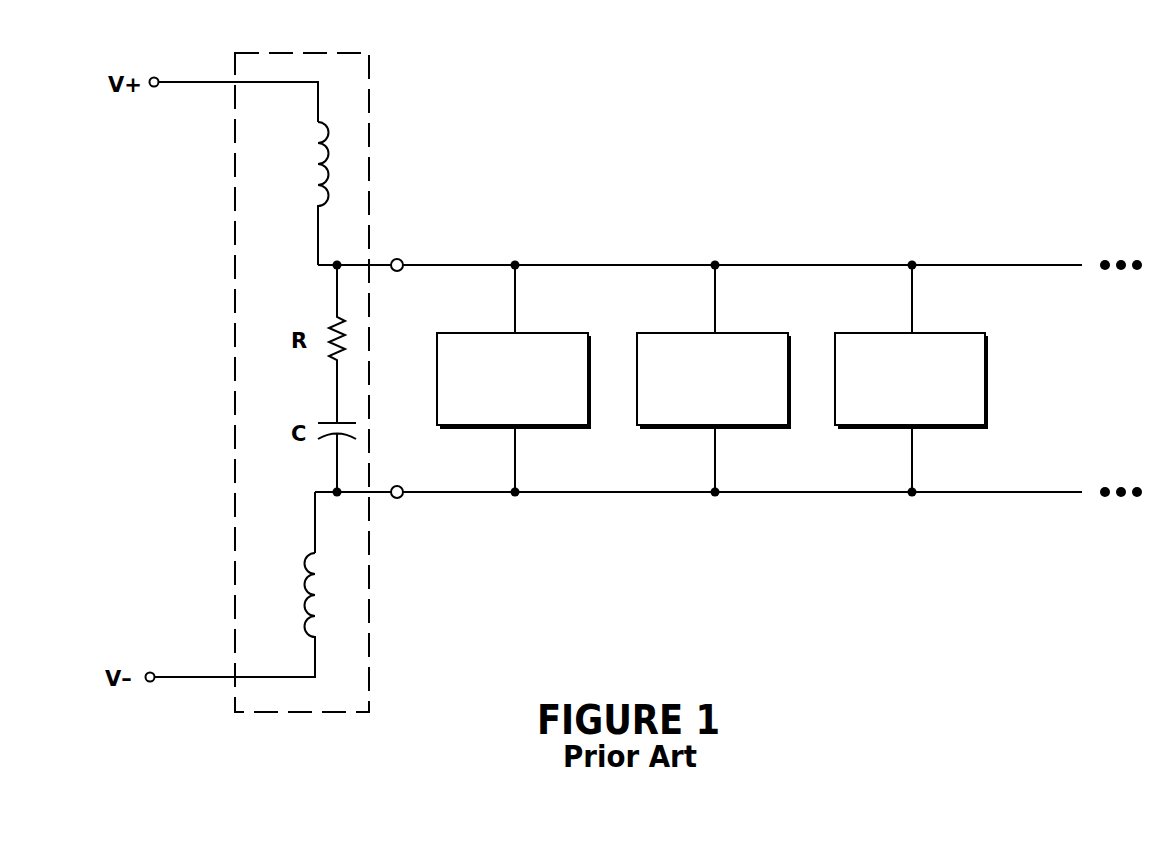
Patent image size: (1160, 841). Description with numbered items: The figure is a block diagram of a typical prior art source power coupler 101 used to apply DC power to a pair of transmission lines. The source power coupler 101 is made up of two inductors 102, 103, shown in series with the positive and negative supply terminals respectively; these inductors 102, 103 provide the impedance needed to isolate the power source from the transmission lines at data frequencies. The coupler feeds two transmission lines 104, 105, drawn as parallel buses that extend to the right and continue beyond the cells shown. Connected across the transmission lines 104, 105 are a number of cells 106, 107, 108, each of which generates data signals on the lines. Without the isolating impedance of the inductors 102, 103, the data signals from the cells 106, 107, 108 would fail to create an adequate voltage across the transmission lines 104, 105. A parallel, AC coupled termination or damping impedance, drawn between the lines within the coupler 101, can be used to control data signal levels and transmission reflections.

The source power coupler 101 is at (357, 52).
The inductor 102 is at (312, 162).
The inductor 103 is at (303, 598).
The transmission line 104 is at (427, 263).
The transmission line 105 is at (427, 491).
The cell 106 is at (535, 331).
The cell 107 is at (735, 331).
The cell 108 is at (933, 331).